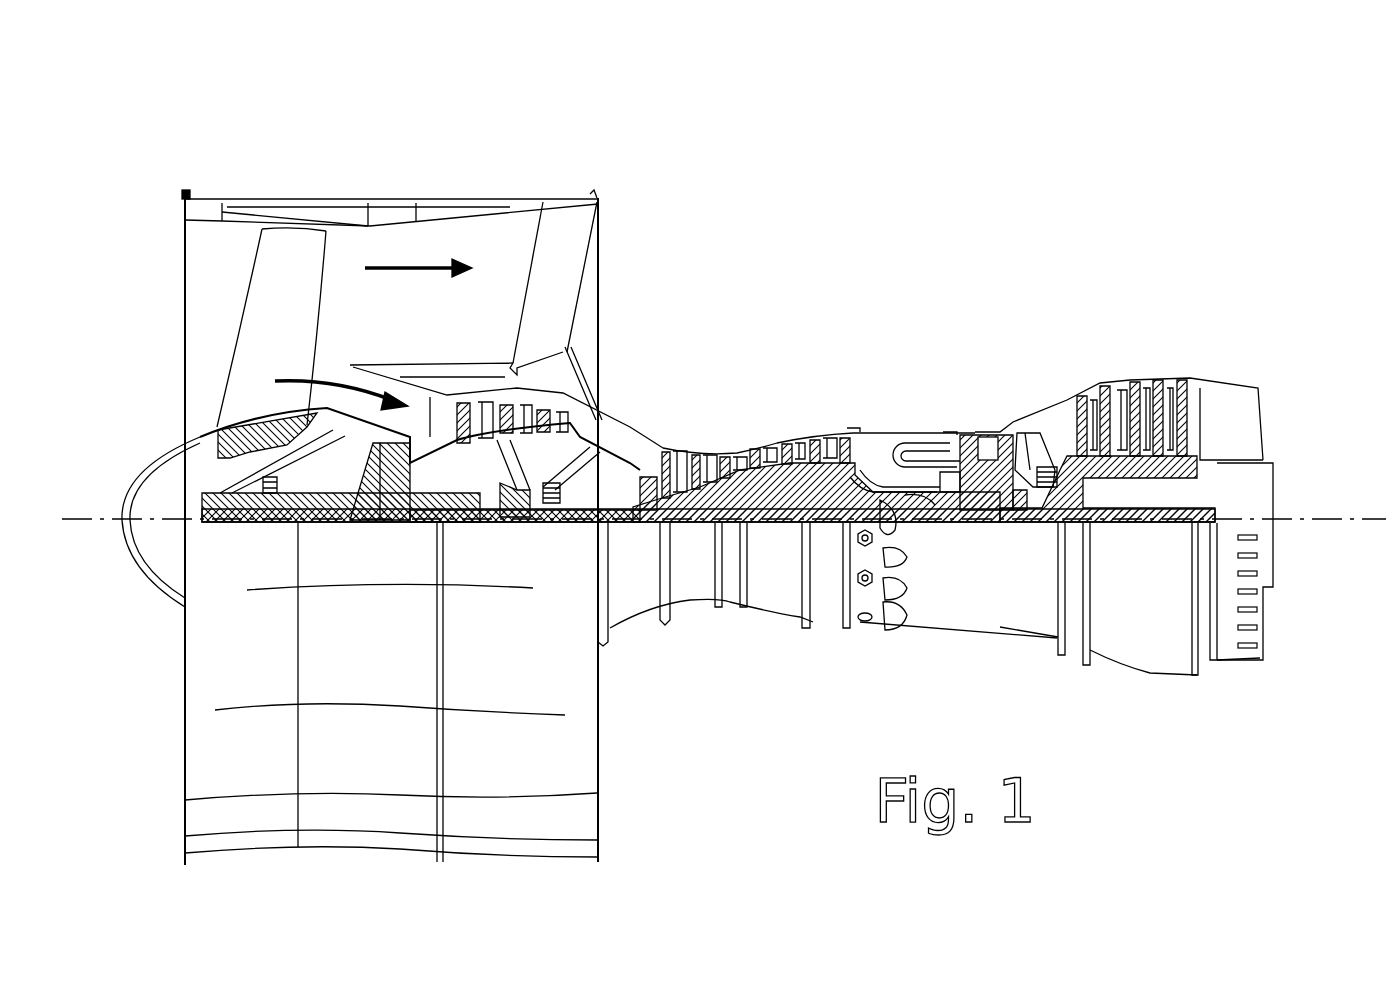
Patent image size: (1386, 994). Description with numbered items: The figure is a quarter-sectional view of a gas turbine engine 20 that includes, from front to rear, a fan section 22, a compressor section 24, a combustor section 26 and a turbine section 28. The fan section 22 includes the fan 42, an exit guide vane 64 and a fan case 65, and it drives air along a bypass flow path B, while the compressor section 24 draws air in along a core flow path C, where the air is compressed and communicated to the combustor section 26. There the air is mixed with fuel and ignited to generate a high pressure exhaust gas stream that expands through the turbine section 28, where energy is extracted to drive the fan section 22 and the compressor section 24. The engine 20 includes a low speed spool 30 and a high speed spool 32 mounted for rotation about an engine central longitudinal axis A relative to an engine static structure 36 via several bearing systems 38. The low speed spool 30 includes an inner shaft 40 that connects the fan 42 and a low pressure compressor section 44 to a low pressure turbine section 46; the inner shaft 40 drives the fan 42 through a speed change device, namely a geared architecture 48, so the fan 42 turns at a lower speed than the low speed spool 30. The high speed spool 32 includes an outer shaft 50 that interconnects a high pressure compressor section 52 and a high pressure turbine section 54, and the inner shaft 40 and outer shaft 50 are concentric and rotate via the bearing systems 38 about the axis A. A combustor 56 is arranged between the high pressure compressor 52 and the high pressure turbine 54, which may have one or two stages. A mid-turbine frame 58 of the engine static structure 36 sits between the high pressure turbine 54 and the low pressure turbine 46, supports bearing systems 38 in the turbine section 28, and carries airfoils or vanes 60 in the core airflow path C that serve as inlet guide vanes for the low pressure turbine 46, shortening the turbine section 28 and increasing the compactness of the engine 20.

The gas turbine engine 20 is at (1097, 204).
The fan section 22 is at (182, 137).
The compressor section 24 is at (880, 310).
The combustor section 26 is at (960, 310).
The turbine section 28 is at (963, 310).
The low speed spool 30 is at (772, 530).
The high speed spool 32 is at (805, 492).
The engine static structure 36 is at (828, 628).
The bearing systems 38 is at (267, 524).
The inner shaft 40 is at (617, 515).
The fan 42 is at (291, 321).
The low pressure compressor section 44 is at (527, 413).
The low pressure turbine section 46 is at (1133, 400).
The geared architecture 48 is at (395, 524).
The outer shaft 50 is at (910, 499).
The high pressure compressor section 52 is at (737, 447).
The high pressure turbine section 54 is at (991, 426).
The combustor 56 is at (903, 455).
The mid-turbine frame 58 is at (1037, 420).
The airfoils/vanes 60 is at (1040, 455).
The exit guide vane 64 is at (541, 277).
The fan case 65 is at (432, 198).
The engine central longitudinal axis A is at (1322, 519).
The bypass flow path B is at (378, 266).
The core flow path C is at (327, 389).